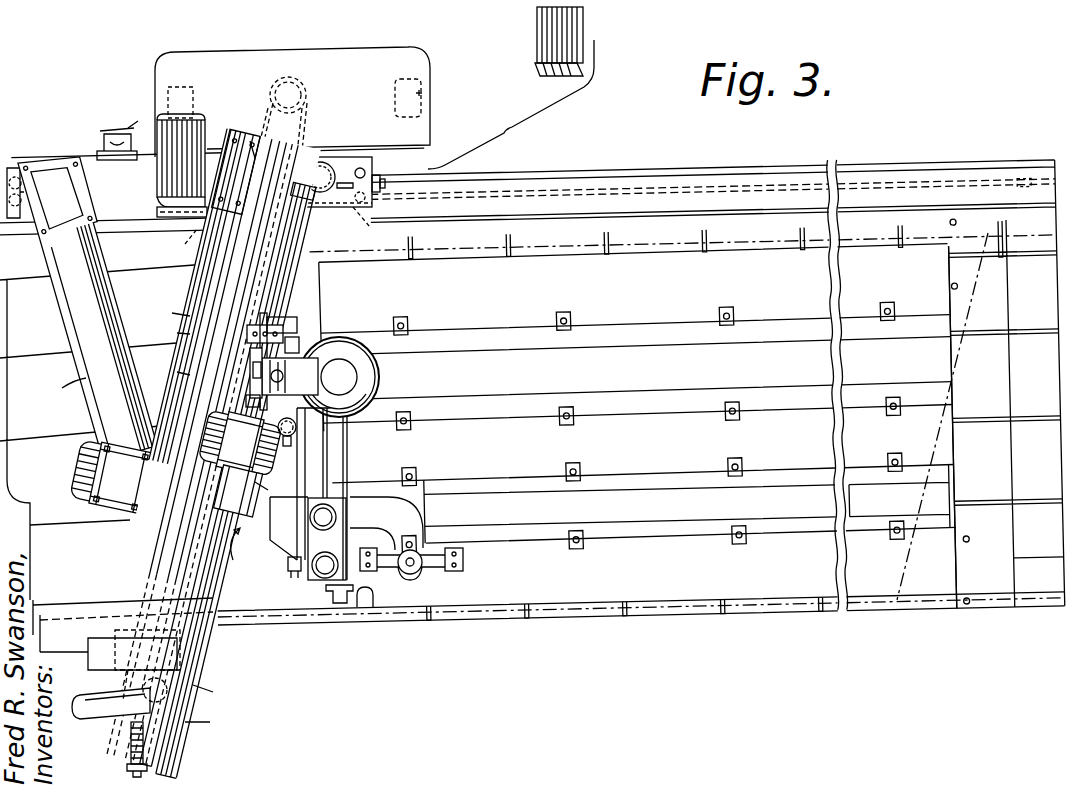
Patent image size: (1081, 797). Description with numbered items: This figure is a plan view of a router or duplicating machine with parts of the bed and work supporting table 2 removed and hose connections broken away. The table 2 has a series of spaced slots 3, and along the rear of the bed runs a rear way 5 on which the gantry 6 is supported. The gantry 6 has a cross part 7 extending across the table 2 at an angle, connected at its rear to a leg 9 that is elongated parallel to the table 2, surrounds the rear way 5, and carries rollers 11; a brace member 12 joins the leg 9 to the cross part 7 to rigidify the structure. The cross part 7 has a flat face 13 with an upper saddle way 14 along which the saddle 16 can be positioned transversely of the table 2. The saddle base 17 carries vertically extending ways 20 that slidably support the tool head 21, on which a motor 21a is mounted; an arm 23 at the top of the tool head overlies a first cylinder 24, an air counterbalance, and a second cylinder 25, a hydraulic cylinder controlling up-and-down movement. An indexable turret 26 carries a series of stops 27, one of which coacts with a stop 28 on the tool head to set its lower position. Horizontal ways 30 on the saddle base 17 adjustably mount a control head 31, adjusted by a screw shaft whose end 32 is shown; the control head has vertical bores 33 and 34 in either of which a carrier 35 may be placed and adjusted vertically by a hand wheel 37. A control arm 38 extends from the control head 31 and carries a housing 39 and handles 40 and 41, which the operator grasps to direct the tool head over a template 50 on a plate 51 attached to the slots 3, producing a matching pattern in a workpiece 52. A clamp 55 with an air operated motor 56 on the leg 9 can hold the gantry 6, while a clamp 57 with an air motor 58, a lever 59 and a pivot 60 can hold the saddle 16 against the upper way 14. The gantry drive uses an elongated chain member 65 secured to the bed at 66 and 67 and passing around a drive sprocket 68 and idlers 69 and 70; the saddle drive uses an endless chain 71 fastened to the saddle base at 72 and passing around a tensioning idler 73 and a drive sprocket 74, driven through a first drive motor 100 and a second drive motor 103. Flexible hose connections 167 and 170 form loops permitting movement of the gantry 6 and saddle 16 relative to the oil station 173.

The work supporting table 2 is at (1038, 600).
The slots 3 is at (1031, 414).
The rear way 5 is at (1012, 165).
The gantry 6 is at (222, 634).
The gantry cross part 7 is at (182, 293).
The leg 9 is at (373, 160).
The rollers 11 is at (18, 220).
The brace member 12 is at (81, 310).
The flat face 13 is at (253, 463).
The upper saddle way 14 is at (258, 485).
The saddle 16 is at (248, 552).
The saddle base 17 is at (272, 330).
The vertically extending ways 20 is at (304, 362).
The tool head 21 is at (304, 352).
The motor 21a is at (379, 383).
The arm 23 is at (339, 401).
The first cylinder 24 is at (288, 345).
The second cylinder 25 is at (292, 376).
The indexable turret 26 is at (249, 466).
The stops 27 is at (296, 436).
The stop 28 is at (298, 426).
The ways 30 is at (310, 485).
The control head 31 is at (318, 574).
The screw shaft end 32 is at (289, 570).
The vertical bore 33 is at (311, 519).
The vertical bore 34 is at (332, 580).
The carrier 35 is at (337, 518).
The hand wheel 37 is at (352, 603).
The control arm 38 is at (405, 515).
The housing 39 is at (427, 580).
The handle 40 is at (372, 572).
The handle 41 is at (467, 561).
The template 50 is at (788, 523).
The plate 51 is at (957, 568).
The workpiece 52 is at (748, 343).
The clamp 55 is at (100, 128).
The air operated motor 56 is at (120, 128).
The clamp 57 is at (251, 362).
The air motor 58 is at (256, 325).
The lever 59 is at (253, 373).
The pivot 60 is at (246, 399).
The elongated member 65 is at (942, 182).
The chain end attachment 66 is at (1032, 194).
The chain end attachment 67 is at (162, 442).
The drive sprocket 68 is at (308, 92).
The idler 69 is at (336, 158).
The idler 70 is at (235, 163).
The endless member 71 is at (178, 291).
The chain fastening 72 is at (185, 293).
The tensioning idler 73 is at (133, 708).
The drive sprocket 74 is at (279, 95).
The first drive motor 100 is at (423, 94).
The second drive motor 103 is at (180, 87).
The flexible hose connection 167 is at (200, 122).
The flexible connection 170 is at (185, 488).
The station 173 is at (583, 42).